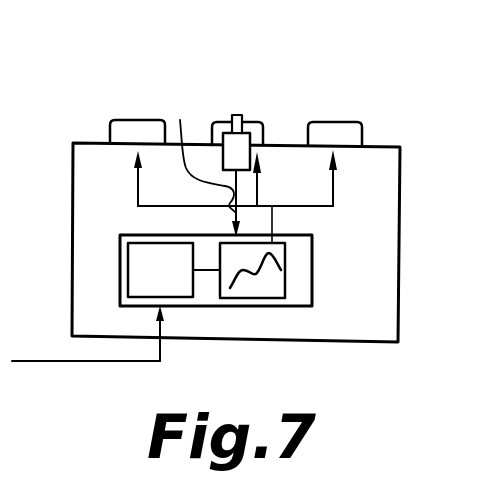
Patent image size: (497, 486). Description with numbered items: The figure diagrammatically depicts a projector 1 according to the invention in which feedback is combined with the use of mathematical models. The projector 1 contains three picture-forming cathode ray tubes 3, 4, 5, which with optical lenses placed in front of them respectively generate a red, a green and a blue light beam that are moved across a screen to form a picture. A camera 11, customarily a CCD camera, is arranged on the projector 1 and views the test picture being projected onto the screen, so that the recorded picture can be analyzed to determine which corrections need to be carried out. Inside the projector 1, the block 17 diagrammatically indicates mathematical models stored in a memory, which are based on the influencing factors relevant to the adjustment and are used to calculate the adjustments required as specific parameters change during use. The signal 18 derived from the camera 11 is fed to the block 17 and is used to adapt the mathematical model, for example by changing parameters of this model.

The CRT projector 1 is at (397, 212).
The cathode ray tube 3 is at (130, 125).
The cathode ray tube 4 is at (255, 127).
The cathode ray tube 5 is at (333, 128).
The camera 11 is at (232, 146).
The block 17 is at (285, 283).
The signal 18 is at (194, 150).